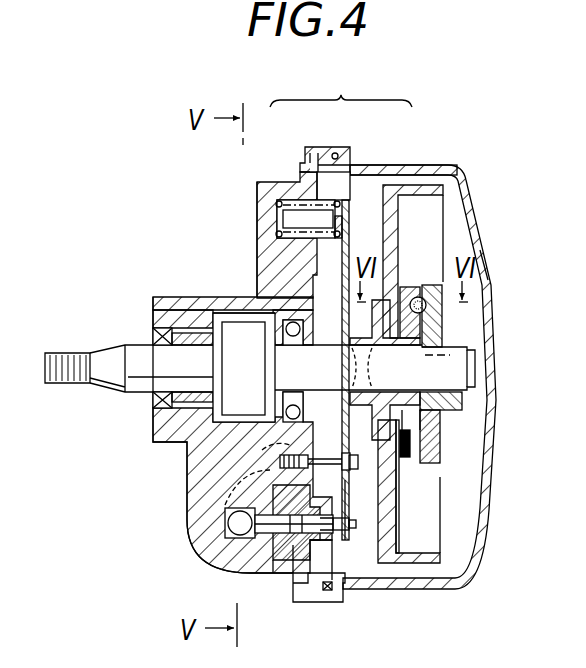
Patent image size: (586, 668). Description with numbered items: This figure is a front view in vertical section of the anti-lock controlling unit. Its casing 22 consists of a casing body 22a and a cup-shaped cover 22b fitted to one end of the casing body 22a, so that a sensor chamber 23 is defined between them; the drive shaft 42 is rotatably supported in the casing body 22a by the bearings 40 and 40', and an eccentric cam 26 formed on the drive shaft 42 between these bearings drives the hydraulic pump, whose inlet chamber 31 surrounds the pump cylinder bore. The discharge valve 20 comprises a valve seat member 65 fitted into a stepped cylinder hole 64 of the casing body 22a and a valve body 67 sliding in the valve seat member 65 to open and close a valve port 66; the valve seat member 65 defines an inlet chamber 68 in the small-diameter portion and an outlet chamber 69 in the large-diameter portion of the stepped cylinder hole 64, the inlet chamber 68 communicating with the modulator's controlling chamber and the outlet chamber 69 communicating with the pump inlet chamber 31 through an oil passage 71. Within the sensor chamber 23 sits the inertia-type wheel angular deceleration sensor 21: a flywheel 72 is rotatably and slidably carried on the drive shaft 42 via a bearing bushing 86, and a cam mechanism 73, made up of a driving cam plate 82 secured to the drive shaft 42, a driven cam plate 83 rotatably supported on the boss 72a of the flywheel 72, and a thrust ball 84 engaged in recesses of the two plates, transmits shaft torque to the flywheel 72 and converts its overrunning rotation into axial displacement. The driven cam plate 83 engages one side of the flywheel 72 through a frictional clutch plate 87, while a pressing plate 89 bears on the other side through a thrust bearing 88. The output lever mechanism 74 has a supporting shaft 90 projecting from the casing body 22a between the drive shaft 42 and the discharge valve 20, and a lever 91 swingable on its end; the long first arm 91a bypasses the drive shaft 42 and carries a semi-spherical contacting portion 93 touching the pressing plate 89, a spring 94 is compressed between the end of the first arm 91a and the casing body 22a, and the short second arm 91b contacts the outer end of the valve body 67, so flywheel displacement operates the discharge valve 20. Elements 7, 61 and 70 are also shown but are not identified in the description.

The cover 7 is at (446, 164).
The discharge valve 20 is at (226, 574).
The inertia-type wheel angular deceleration sensor 21 is at (455, 226).
The casing 22 is at (341, 85).
The casing body 22a is at (284, 182).
The cup-shaped cover 22b is at (378, 165).
The sensor chamber 23 is at (486, 252).
The eccentric cam 26 is at (240, 325).
The inlet chamber 31 is at (244, 367).
The bearing 40 is at (183, 368).
The bearing 40' is at (282, 371).
The drive shaft 42 is at (135, 352).
The screw 61 is at (276, 491).
The stepped cylinder hole 64 is at (228, 537).
The valve seat member 65 is at (313, 592).
The valve port 66 is at (270, 563).
The valve body 67 is at (293, 560).
The inlet chamber 68 is at (240, 513).
The outlet chamber 69 is at (280, 577).
The ball 70 is at (228, 517).
The oil passage 71 is at (262, 450).
The flywheel 72 is at (401, 220).
The boss 72a is at (420, 414).
The cam mechanism 73 is at (432, 280).
The output lever mechanism 74 is at (344, 226).
The driving cam plate 82 is at (437, 450).
The driven cam plate 83 is at (405, 458).
The thrust ball 84 is at (426, 308).
The bearing bushing 86 is at (424, 347).
The frictional clutch plate 87 is at (398, 463).
The thrust bearing 88 is at (385, 370).
The pressing plate 89 is at (364, 460).
The supporting shaft 90 is at (332, 468).
The lever 91 is at (357, 234).
The first arm 91a is at (342, 253).
The second arm 91b is at (350, 538).
The contacting portion 93 is at (352, 371).
The spring 94 is at (278, 203).